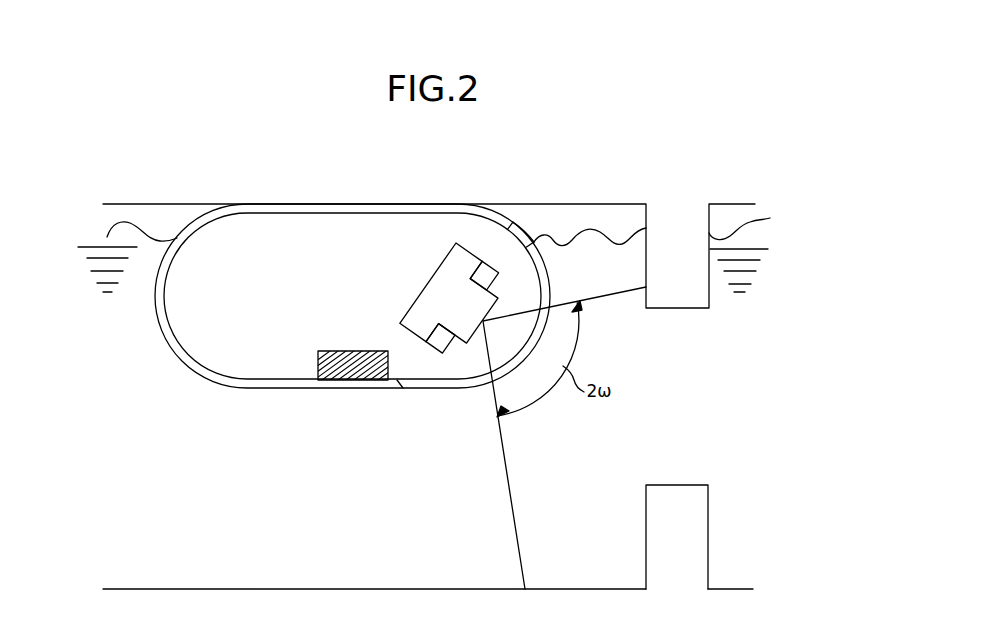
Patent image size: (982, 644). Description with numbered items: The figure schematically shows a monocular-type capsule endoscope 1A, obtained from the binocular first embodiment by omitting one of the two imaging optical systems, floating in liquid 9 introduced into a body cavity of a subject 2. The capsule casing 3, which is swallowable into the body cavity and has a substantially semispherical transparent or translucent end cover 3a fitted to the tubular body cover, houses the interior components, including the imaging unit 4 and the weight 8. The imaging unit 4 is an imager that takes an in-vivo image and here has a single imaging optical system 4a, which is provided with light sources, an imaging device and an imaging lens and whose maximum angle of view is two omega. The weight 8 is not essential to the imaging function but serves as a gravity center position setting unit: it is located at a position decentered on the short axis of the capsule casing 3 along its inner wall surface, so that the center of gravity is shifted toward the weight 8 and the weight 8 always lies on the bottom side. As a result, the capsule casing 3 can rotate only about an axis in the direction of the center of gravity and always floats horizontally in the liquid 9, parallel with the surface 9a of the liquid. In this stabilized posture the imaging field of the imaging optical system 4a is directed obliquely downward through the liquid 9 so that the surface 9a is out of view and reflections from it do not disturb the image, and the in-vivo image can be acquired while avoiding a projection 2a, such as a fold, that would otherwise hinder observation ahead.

The capsule endoscope 1A is at (163, 334).
The subject 2 is at (157, 605).
The projection 2a is at (700, 545).
The capsule casing 3 is at (199, 365).
The end cover 3a is at (543, 258).
The imaging unit 4 is at (428, 256).
The imaging optical system 4a is at (461, 258).
The weight 8 is at (350, 368).
The liquid 9 is at (757, 288).
The surface of the liquid 9a is at (602, 228).